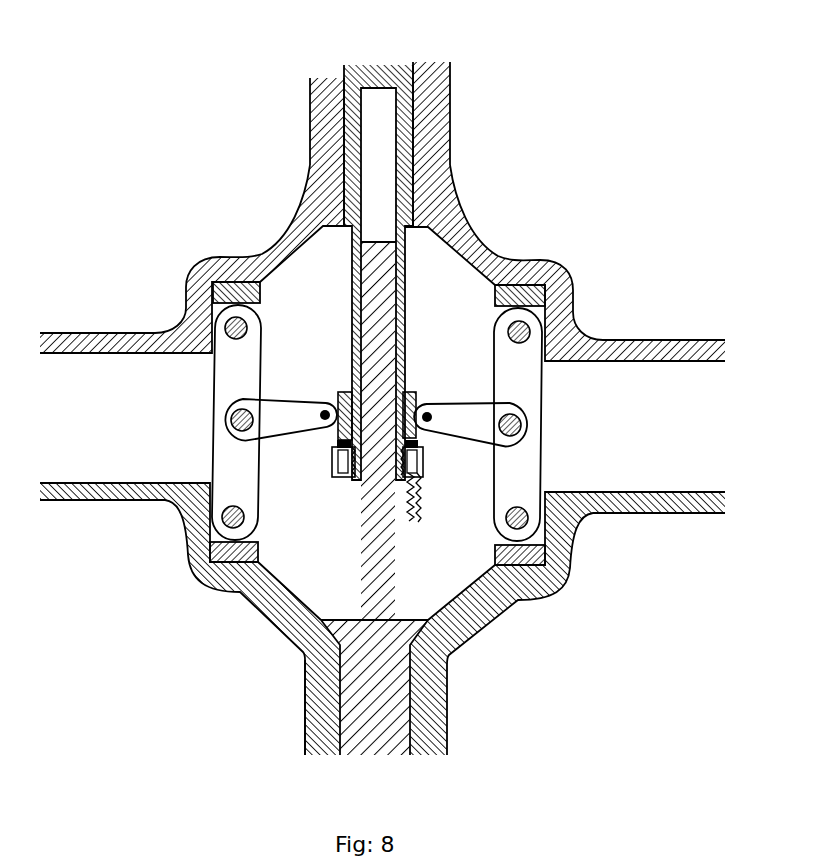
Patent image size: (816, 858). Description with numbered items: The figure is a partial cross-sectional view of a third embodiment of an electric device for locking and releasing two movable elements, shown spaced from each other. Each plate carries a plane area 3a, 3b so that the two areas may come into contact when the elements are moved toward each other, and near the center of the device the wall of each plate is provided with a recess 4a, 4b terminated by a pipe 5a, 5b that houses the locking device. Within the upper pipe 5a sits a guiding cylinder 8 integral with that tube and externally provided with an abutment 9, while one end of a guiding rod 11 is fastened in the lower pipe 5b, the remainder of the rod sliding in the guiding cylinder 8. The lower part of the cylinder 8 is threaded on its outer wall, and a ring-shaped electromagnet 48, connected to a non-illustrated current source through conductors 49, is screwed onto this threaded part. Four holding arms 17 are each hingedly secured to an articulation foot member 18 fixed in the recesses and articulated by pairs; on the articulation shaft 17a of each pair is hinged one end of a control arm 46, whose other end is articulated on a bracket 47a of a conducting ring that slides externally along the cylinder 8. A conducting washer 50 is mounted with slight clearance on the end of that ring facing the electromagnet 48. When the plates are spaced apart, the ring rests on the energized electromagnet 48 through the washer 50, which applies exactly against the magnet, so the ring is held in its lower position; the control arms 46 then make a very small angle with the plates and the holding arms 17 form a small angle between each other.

The guiding cylinder 8 is at (402, 103).
The pipe 5a is at (325, 125).
The abutment 9 is at (415, 216).
The recess 4a is at (452, 276).
The articulation foot member 18 is at (221, 290).
The holding arm 17 is at (524, 368).
The plane area 3a is at (68, 328).
The bracket 47a is at (334, 405).
The articulation shaft 17a is at (518, 422).
The washer 50 is at (420, 452).
The plane area 3b is at (62, 504).
The control arm 46 is at (255, 432).
The recess 4b is at (307, 553).
The electromagnet 48 is at (421, 478).
The conductor 49 is at (410, 520).
The pipe 5b is at (308, 720).
The guiding rod 11 is at (397, 735).